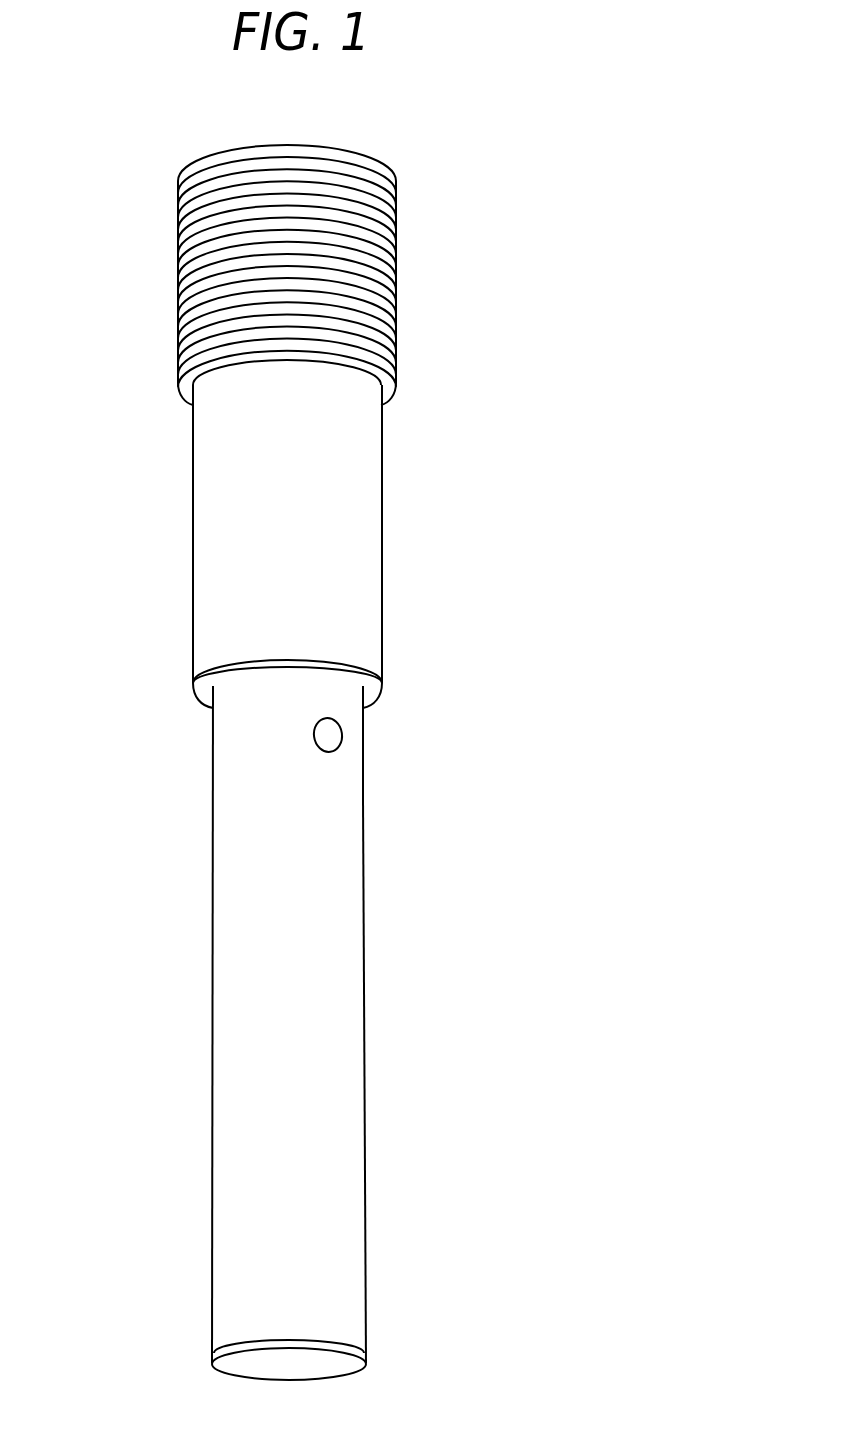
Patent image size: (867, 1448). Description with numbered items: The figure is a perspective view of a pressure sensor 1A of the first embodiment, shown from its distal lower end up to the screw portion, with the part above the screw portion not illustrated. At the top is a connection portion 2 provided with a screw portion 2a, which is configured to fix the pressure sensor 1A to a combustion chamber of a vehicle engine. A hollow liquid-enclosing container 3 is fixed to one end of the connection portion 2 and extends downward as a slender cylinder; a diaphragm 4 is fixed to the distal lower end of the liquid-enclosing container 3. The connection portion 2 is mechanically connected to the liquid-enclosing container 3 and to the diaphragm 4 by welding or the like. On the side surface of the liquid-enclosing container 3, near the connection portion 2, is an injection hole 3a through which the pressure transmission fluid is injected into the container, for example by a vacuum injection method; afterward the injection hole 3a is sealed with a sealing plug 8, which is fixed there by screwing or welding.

The pressure sensor 1A is at (455, 165).
The screw portion 2a is at (178, 255).
The connection portion 2 is at (377, 508).
The liquid-enclosing container 3 is at (213, 900).
The injection hole 3a is at (343, 728).
The sealing plug 8 is at (332, 740).
The diaphragm 4 is at (366, 1365).